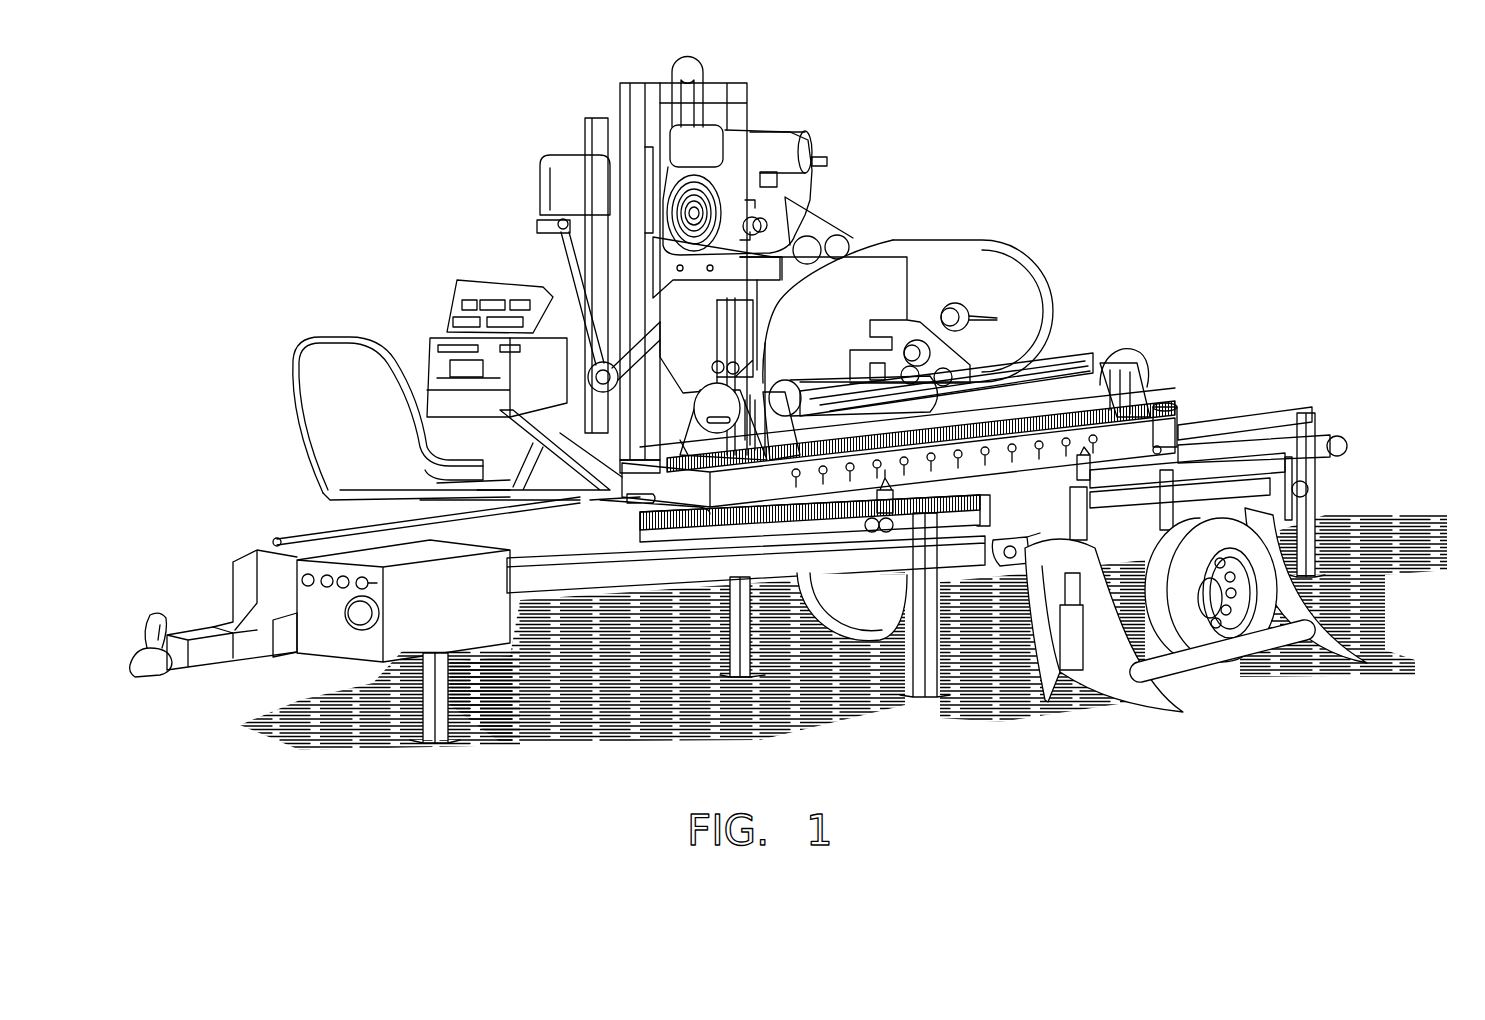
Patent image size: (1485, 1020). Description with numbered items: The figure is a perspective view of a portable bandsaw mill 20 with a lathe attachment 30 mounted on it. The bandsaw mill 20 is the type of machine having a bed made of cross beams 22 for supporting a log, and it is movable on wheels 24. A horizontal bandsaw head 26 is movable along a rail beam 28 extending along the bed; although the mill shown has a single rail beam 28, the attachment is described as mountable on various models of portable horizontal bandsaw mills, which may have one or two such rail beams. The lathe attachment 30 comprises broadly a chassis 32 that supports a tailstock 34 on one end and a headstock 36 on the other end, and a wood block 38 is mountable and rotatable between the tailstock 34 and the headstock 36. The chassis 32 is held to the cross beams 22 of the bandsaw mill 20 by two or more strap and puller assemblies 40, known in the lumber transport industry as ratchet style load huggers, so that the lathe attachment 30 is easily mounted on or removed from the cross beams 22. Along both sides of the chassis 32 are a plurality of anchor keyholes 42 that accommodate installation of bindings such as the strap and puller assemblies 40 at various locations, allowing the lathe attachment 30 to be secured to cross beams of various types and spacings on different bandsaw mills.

The portable bandsaw mill 20 is at (453, 167).
The cross beams 22 is at (1232, 642).
The wheels 24 is at (1305, 620).
The bandsaw head 26 is at (1018, 252).
The rail beam 28 is at (307, 535).
The lathe attachment 30 is at (1187, 340).
The chassis 32 is at (777, 487).
The tailstock 34 is at (760, 383).
The headstock 36 is at (1125, 360).
The wood block 38 is at (1047, 357).
The strap and puller assemblies 40 is at (882, 487).
The anchor keyholes 42 is at (1163, 420).